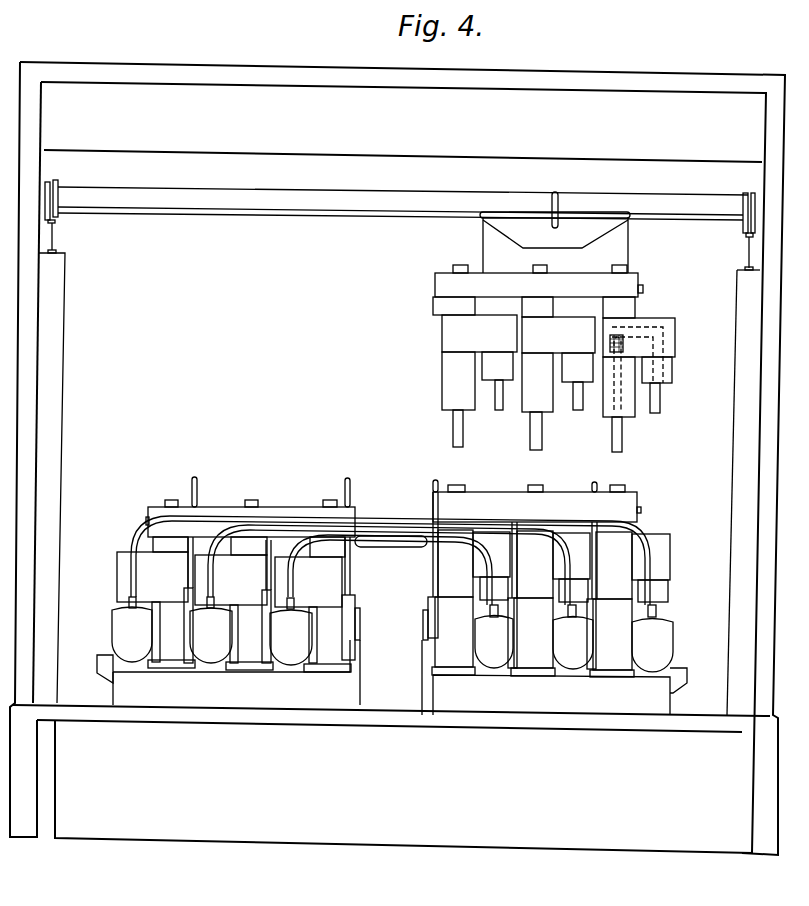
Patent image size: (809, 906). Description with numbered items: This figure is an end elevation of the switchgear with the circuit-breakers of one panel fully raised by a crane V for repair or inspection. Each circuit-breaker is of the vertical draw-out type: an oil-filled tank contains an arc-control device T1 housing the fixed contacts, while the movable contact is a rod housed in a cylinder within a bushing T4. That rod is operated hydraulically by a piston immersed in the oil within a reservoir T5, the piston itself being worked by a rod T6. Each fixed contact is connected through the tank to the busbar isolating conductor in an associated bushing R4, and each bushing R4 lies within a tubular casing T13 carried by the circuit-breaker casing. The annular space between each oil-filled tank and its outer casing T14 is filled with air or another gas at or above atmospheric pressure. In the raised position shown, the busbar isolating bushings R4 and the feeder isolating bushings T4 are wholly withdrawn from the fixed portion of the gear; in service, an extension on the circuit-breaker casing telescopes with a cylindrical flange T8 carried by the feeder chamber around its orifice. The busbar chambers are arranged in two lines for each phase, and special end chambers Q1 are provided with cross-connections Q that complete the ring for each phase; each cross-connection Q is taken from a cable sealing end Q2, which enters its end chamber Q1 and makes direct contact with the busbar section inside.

The crane V is at (525, 212).
The reservoir T5 is at (445, 285).
The rod T6 is at (645, 291).
The outer casing T14 is at (452, 303).
The tubular casing T13 is at (660, 587).
The arc-control device T1 is at (618, 340).
The bushing T4 is at (455, 425).
The bushing R4 is at (500, 387).
The cylindrical flange T8 is at (452, 637).
The cross-connections Q is at (402, 537).
The end chambers Q1 is at (127, 622).
The cable sealing end Q2 is at (293, 598).